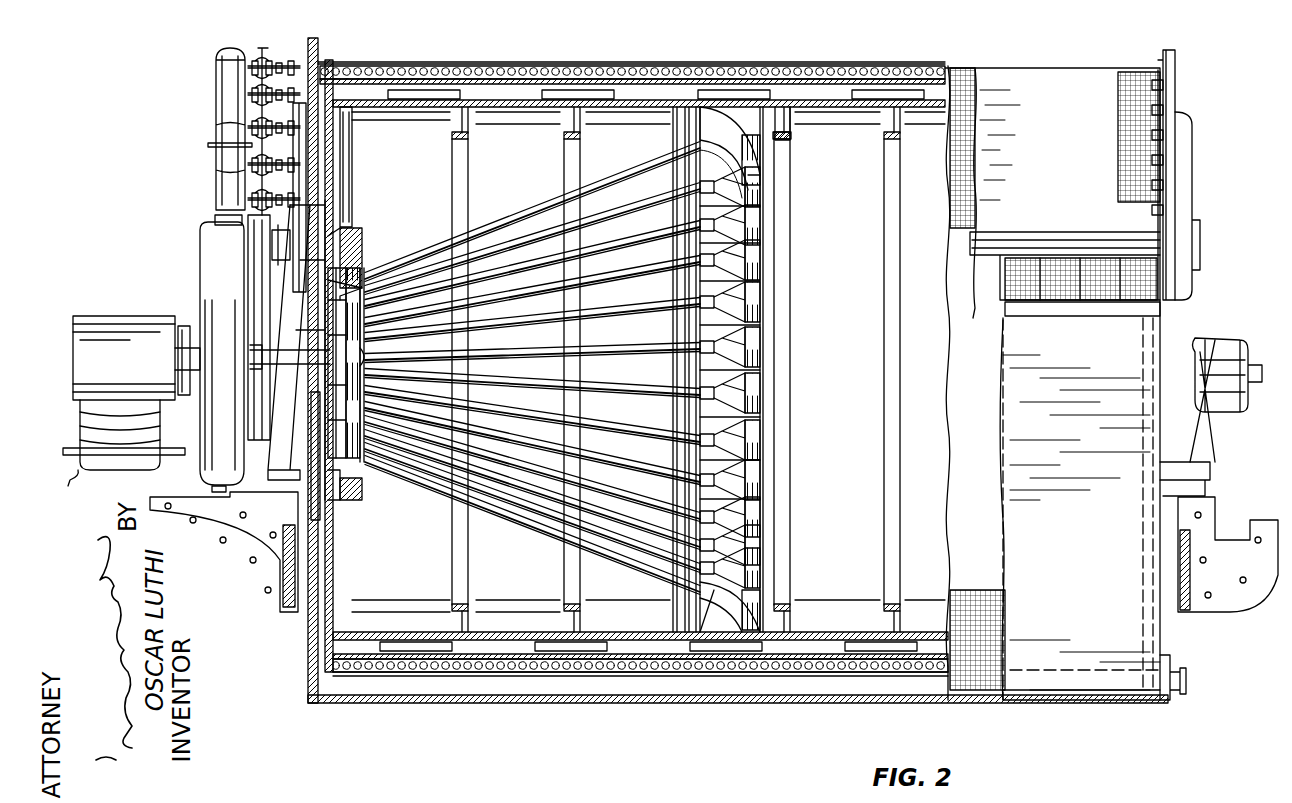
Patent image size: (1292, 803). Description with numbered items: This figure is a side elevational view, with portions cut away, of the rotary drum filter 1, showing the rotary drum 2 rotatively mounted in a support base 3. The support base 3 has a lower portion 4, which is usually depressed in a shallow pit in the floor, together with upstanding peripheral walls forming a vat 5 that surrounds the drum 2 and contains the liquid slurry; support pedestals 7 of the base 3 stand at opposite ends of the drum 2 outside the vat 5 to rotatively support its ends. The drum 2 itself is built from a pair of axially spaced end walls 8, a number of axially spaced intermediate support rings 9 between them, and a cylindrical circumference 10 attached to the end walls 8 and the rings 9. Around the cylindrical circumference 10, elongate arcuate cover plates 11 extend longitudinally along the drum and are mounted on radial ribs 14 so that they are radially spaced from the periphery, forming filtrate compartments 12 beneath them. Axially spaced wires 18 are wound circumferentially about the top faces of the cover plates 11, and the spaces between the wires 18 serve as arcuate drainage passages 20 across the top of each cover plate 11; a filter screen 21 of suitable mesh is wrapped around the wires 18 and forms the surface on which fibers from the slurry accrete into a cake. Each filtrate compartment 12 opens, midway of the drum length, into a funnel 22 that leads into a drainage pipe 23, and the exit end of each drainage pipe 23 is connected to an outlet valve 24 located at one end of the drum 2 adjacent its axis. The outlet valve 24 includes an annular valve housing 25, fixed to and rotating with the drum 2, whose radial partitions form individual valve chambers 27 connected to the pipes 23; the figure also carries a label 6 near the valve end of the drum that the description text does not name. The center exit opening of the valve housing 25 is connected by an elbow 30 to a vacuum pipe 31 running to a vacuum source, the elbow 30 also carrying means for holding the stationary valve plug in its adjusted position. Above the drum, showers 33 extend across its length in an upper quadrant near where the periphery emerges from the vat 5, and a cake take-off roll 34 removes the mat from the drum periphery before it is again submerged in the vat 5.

The rotary drum filter 1 is at (198, 165).
The rotary drum 2 is at (858, 66).
The support base 3 is at (1038, 694).
The lower portion 4 is at (1145, 652).
The vat 5 is at (1056, 556).
The hub support block 6 is at (352, 243).
The support pedestals 7 is at (286, 449).
The end walls 8 is at (334, 187).
The intermediate support rings 9 is at (458, 200).
The cylindrical circumference 10 is at (841, 100).
The cover plates 11 is at (584, 72).
The filtrate compartments 12 is at (644, 114).
The radial ribs 14 is at (794, 106).
The wires 18 is at (408, 70).
The drainage passages 20 is at (500, 74).
The filter screen 21 is at (644, 76).
The funnel 22 is at (745, 106).
The drainage pipe 23 is at (520, 228).
The outlet valve 24 is at (325, 355).
The annular valve housing 25 is at (320, 392).
The valve chambers 27 is at (330, 300).
The elbow 30 is at (128, 365).
The vacuum pipe 31 is at (120, 455).
The showers 33 is at (1175, 78).
The take-off roll 34 is at (1110, 234).